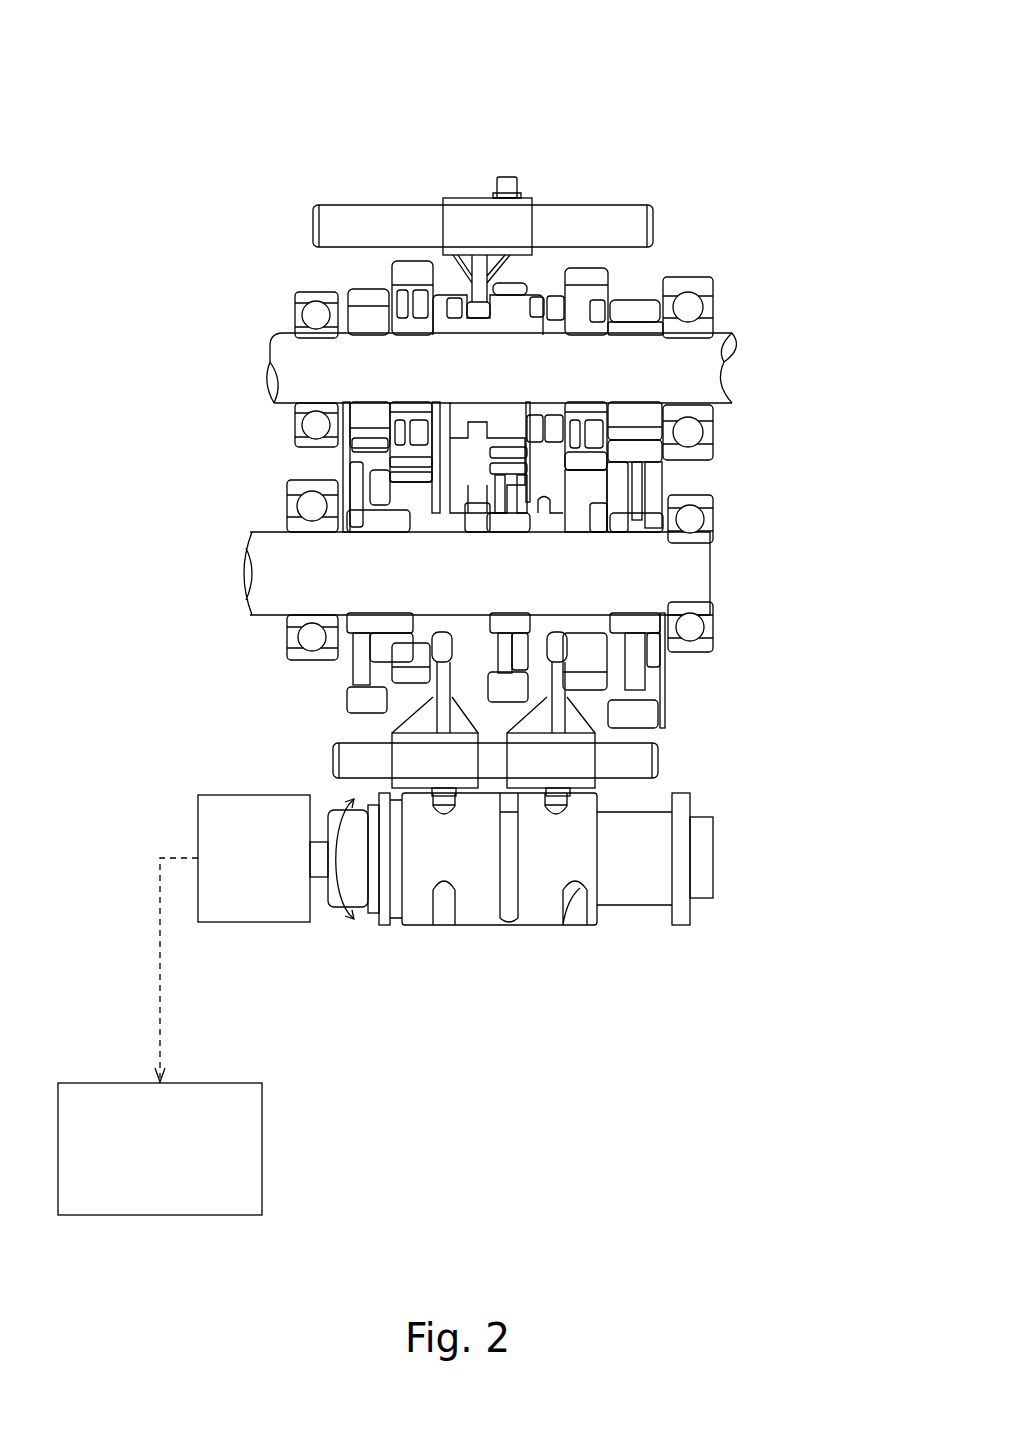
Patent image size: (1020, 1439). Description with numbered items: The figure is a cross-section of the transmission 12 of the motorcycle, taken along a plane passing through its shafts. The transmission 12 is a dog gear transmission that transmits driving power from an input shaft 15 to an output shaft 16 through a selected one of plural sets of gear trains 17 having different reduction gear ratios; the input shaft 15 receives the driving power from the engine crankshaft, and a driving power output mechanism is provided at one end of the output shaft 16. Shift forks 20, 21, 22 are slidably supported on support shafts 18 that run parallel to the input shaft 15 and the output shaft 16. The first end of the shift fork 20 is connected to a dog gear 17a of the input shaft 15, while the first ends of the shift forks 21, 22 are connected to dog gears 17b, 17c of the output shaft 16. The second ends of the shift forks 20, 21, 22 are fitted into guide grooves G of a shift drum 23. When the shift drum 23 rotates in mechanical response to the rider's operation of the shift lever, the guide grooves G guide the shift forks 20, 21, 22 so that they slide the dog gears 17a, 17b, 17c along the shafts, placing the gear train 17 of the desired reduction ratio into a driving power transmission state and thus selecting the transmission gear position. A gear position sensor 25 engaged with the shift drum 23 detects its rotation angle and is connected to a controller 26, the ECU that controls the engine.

The transmission 12 is at (308, 112).
The input shaft 15 is at (286, 357).
The output shaft 16 is at (258, 576).
The gear trains 17 is at (323, 278).
The dog gear 17a is at (518, 288).
The dog gear 17b is at (592, 672).
The dog gear 17c is at (405, 655).
The support shafts 18 is at (657, 223).
The shift fork 20 is at (471, 222).
The shift fork 21 is at (610, 790).
The shift fork 22 is at (423, 765).
The shift drum 23 is at (578, 762).
The gear position sensor 25 is at (258, 923).
The controller 26 is at (262, 1148).
The guide grooves G is at (567, 915).